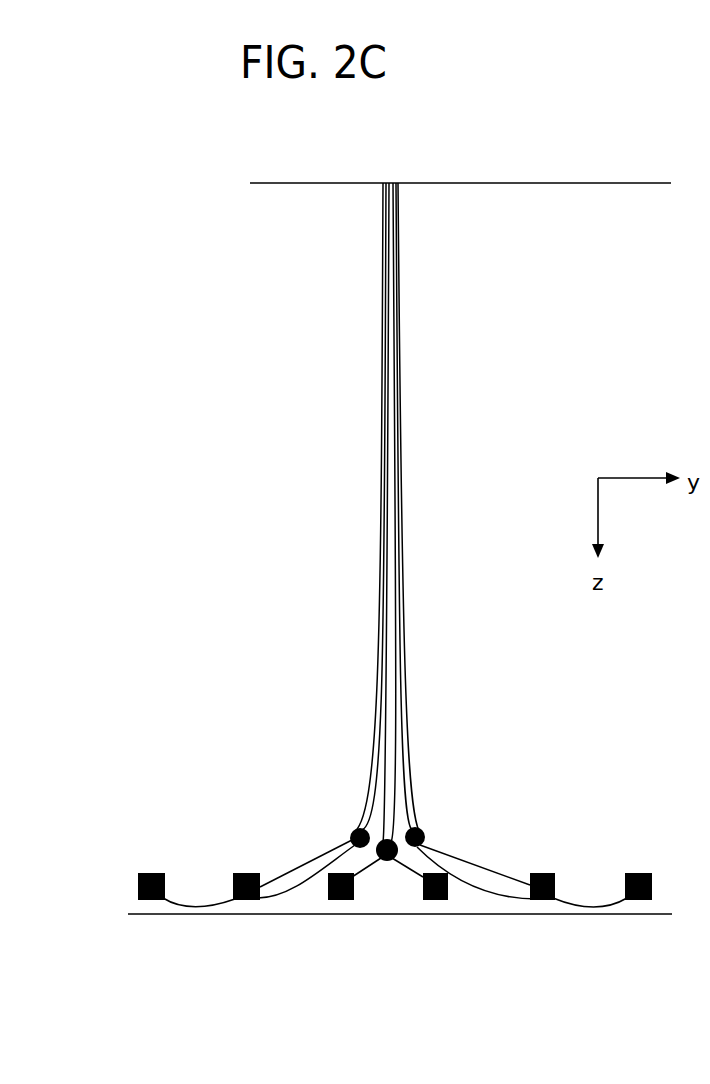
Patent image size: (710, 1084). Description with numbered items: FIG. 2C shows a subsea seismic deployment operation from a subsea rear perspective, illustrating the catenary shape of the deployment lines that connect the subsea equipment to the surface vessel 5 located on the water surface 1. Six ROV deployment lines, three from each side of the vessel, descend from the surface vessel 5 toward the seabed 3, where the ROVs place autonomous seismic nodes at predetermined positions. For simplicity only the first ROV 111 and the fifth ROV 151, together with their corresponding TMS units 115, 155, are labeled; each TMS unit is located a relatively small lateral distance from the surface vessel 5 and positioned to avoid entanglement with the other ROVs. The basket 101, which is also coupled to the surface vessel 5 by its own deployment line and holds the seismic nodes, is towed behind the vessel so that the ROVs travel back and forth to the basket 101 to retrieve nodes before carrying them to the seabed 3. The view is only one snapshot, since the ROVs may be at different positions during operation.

The water surface 1 is at (513, 187).
The surface vessel 5 is at (382, 188).
The seabed 3 is at (128, 914).
The first ROV 111 is at (152, 870).
The fifth ROV 151 is at (547, 872).
The TMS unit 115 is at (360, 827).
The TMS unit 155 is at (413, 827).
The basket 101 is at (385, 862).